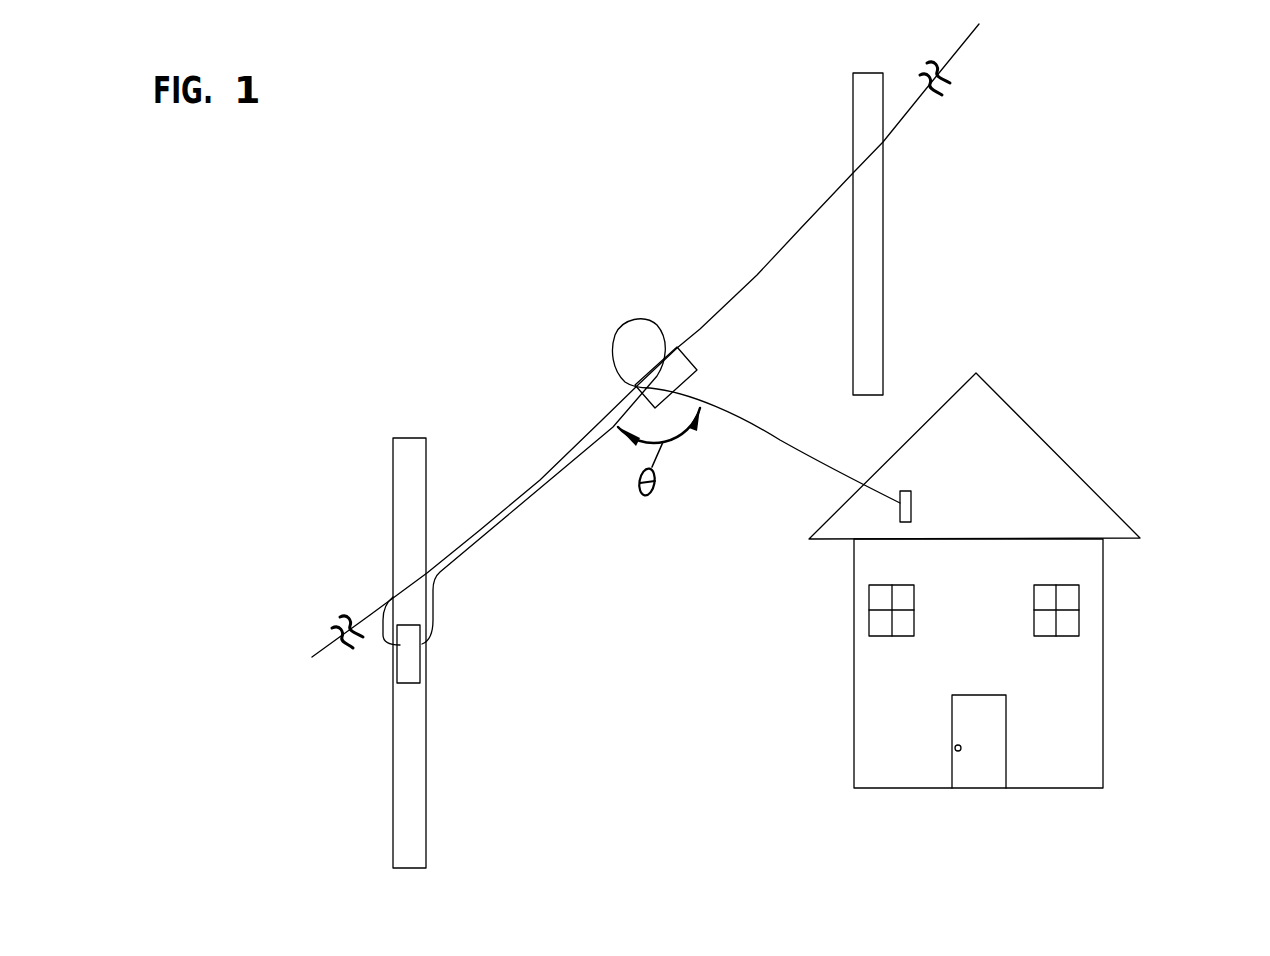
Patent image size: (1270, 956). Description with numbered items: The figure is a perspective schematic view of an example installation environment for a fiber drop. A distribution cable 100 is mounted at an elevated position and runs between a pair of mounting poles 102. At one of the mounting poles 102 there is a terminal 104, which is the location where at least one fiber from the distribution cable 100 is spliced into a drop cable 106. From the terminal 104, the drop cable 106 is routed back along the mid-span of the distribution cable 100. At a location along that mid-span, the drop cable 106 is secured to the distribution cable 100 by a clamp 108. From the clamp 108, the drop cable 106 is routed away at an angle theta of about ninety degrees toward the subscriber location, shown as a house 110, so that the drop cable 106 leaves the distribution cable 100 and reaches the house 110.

The distribution cable 100 is at (757, 278).
The mounting poles 102 is at (865, 278).
The terminal 104 is at (413, 667).
The drop cable 106 is at (780, 443).
The clamp 108 is at (685, 370).
The house 110 is at (1140, 584).